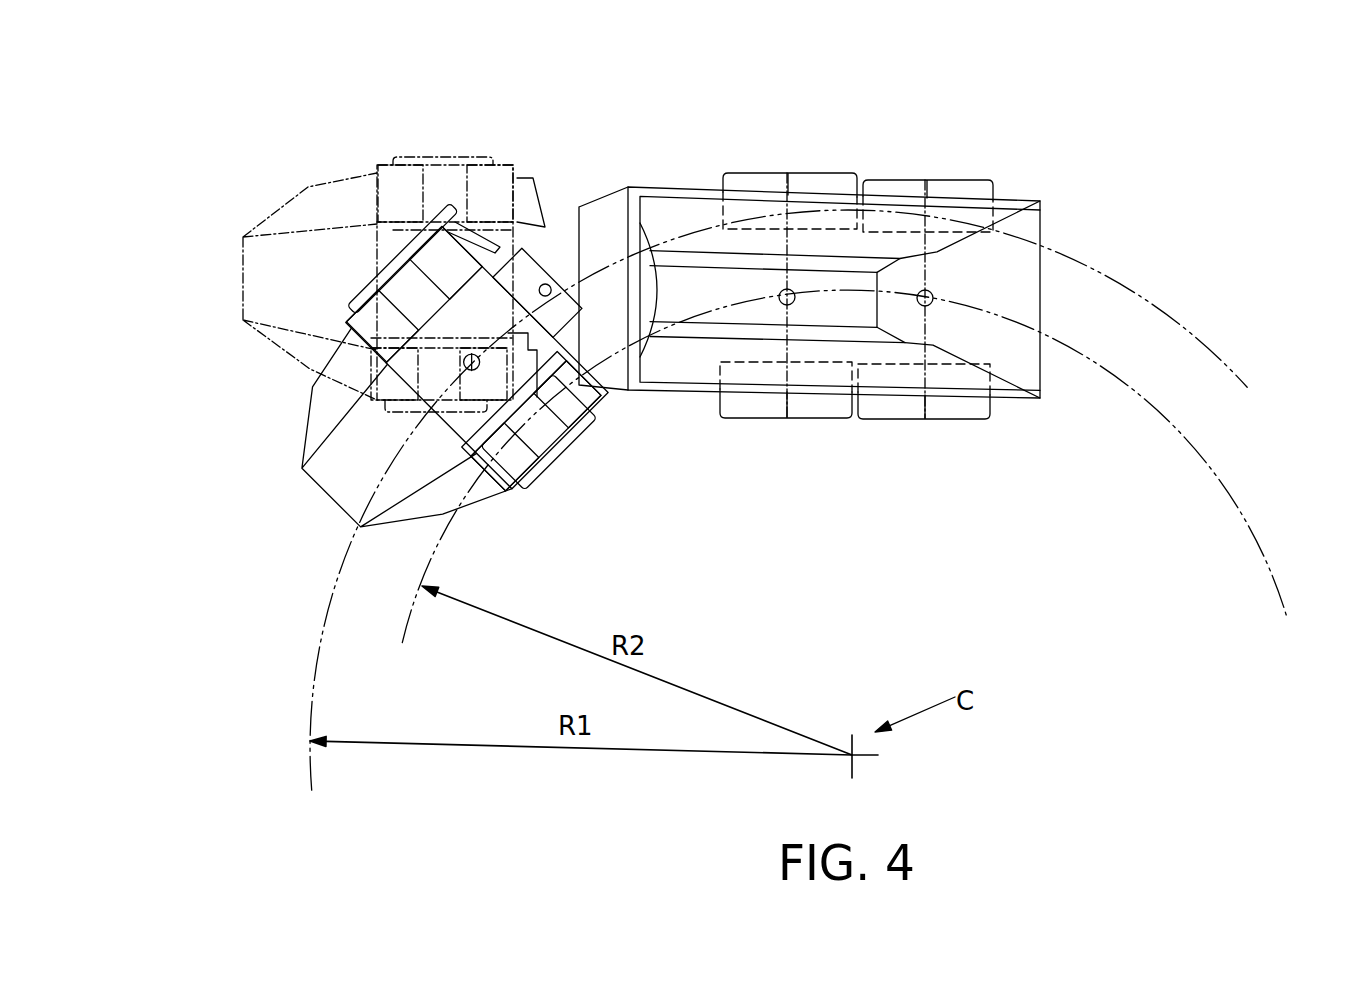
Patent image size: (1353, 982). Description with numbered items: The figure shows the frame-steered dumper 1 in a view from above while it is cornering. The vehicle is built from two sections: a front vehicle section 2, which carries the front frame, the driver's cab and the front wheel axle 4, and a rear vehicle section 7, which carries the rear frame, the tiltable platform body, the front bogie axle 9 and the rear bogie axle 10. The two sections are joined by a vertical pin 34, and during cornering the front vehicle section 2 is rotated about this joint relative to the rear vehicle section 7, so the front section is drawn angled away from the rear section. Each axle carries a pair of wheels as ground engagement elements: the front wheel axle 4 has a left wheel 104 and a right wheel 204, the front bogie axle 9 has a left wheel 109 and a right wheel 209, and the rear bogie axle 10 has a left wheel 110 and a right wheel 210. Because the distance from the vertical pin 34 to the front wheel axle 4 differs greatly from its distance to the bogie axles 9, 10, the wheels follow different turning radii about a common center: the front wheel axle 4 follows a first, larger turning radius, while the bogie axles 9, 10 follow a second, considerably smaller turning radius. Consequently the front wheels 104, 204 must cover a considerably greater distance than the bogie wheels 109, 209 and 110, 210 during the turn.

The frame-steered dumper 1 is at (955, 555).
The front vehicle section 2 is at (254, 501).
The front wheel axle 4 is at (552, 457).
The rear vehicle section 7 is at (1083, 175).
The front bogie axle 9 is at (785, 173).
The rear bogie axle 10 is at (927, 180).
The vertical pin 34 is at (567, 248).
The left ground engagement element 104 is at (590, 417).
The right ground engagement element 204 is at (412, 232).
The left ground engagement element 109 is at (727, 410).
The left ground engagement element 110 is at (993, 414).
The right ground engagement element 209 is at (720, 176).
The right ground engagement element 210 is at (993, 185).